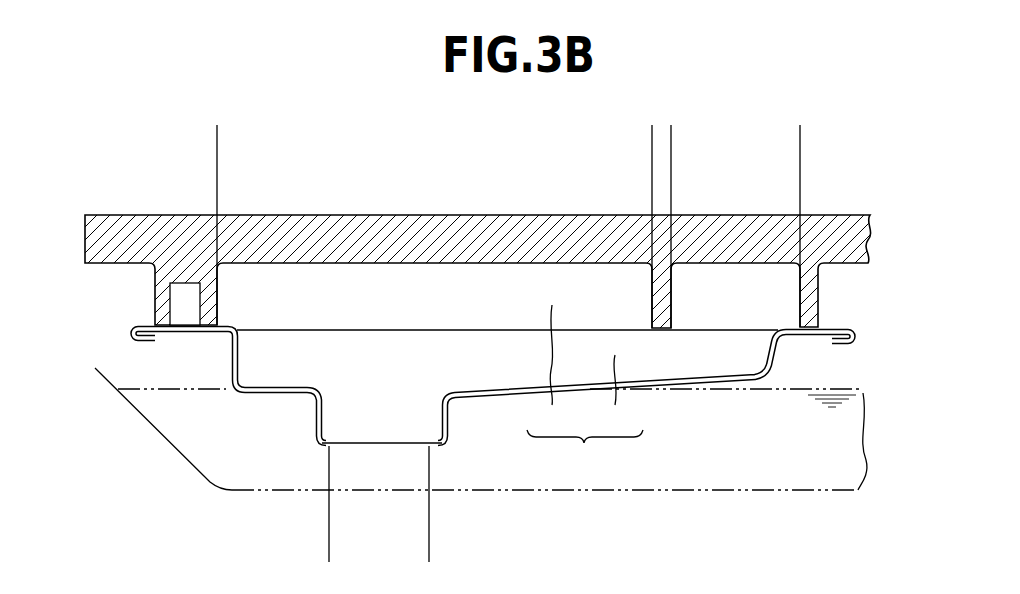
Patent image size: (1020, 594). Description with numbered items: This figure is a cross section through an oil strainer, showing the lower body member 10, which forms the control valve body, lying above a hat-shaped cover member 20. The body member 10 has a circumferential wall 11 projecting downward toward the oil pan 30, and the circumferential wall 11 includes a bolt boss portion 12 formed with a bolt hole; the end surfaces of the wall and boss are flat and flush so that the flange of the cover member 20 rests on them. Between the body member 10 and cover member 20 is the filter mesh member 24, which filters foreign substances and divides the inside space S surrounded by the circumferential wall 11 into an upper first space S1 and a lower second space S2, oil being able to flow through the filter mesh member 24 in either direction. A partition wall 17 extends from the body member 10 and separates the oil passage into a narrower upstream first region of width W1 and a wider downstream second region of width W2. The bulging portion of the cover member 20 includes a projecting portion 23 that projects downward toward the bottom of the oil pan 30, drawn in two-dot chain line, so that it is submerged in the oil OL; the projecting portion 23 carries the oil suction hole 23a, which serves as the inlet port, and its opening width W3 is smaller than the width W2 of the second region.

The lower body member 10 is at (838, 230).
The circumferential wall 11 is at (811, 310).
The bolt boss portion 12 is at (162, 293).
The partition wall 17 is at (665, 301).
The cover member 20 is at (777, 352).
The projecting portion 23 is at (313, 425).
The oil suction hole 23a is at (388, 447).
The filter mesh member 24 is at (388, 333).
The oil pan 30 is at (722, 493).
The width of first region W1 is at (800, 162).
The width of second region W2 is at (652, 162).
The width of opening of suction hole W3 is at (429, 532).
The inside space S is at (585, 450).
The first space S1 is at (549, 369).
The second space S2 is at (613, 394).
The oil OL is at (808, 452).